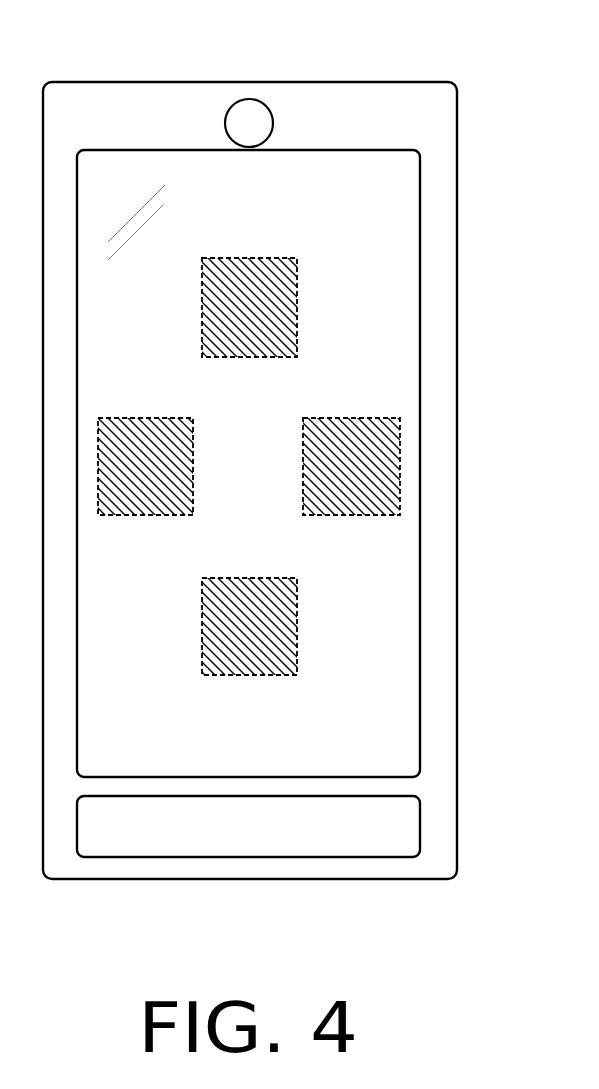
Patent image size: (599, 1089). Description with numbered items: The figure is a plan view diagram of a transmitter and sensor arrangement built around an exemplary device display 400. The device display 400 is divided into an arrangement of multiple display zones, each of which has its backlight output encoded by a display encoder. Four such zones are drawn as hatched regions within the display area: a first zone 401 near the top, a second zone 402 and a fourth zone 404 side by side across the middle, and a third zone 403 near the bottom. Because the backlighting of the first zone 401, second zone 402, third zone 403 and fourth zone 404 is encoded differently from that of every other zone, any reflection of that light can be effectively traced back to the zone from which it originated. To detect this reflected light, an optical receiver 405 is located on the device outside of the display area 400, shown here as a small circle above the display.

The device display 400 is at (362, 315).
The first zone 401 is at (224, 322).
The second zone 402 is at (121, 481).
The third zone 403 is at (224, 641).
The fourth zone 404 is at (327, 481).
The optical receiver 405 is at (247, 127).